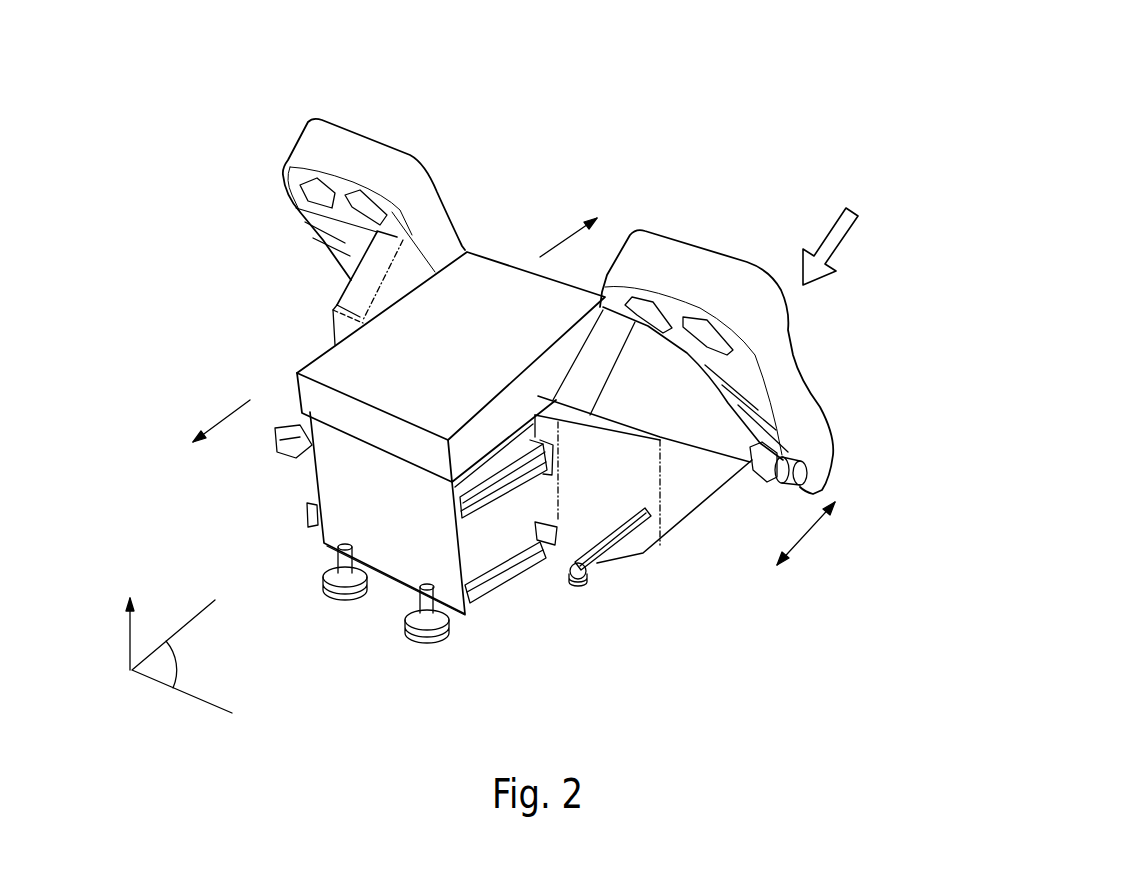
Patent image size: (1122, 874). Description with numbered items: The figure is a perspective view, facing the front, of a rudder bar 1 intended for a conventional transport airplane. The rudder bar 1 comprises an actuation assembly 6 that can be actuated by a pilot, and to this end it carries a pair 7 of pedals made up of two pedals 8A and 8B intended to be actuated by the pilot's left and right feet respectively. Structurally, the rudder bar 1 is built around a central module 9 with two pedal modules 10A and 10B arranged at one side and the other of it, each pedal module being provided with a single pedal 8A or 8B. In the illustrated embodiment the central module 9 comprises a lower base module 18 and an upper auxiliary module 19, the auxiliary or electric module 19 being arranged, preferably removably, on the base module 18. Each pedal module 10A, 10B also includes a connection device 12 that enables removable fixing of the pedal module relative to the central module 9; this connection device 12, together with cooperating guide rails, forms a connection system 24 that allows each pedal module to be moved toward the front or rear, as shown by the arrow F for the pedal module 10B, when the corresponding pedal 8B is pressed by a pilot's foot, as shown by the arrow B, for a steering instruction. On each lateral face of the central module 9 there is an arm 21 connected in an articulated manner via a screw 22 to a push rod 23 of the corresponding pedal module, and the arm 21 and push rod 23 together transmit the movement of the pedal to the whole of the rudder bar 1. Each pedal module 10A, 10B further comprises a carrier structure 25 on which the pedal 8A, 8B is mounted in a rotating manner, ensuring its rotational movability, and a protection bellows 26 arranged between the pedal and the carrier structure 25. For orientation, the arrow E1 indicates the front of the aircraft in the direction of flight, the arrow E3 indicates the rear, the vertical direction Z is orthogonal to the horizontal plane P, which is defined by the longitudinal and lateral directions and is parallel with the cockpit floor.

The rudder bar 1 is at (148, 173).
The actuation assembly 6 is at (235, 292).
The pair of pedals 7 is at (260, 133).
The pedal 8A is at (367, 147).
The pedal 8B is at (800, 371).
The central module 9 is at (292, 358).
The pedal module 10A is at (340, 105).
The pedal module 10B is at (768, 248).
The connection device 12 is at (478, 631).
The base module 18 is at (392, 585).
The auxiliary module 19 is at (482, 252).
The arm 21 is at (533, 573).
The screw 22 is at (593, 573).
The push rod 23 is at (627, 547).
The connection system 24 is at (570, 625).
The carrier structure 25 is at (702, 505).
The protection bellows 26 is at (347, 283).
The arrow B is at (843, 240).
The arrow E1 is at (227, 417).
The arrow E3 is at (560, 243).
The arrow F is at (807, 533).
The vertical direction Z is at (130, 635).
The horizontal plane P is at (182, 656).